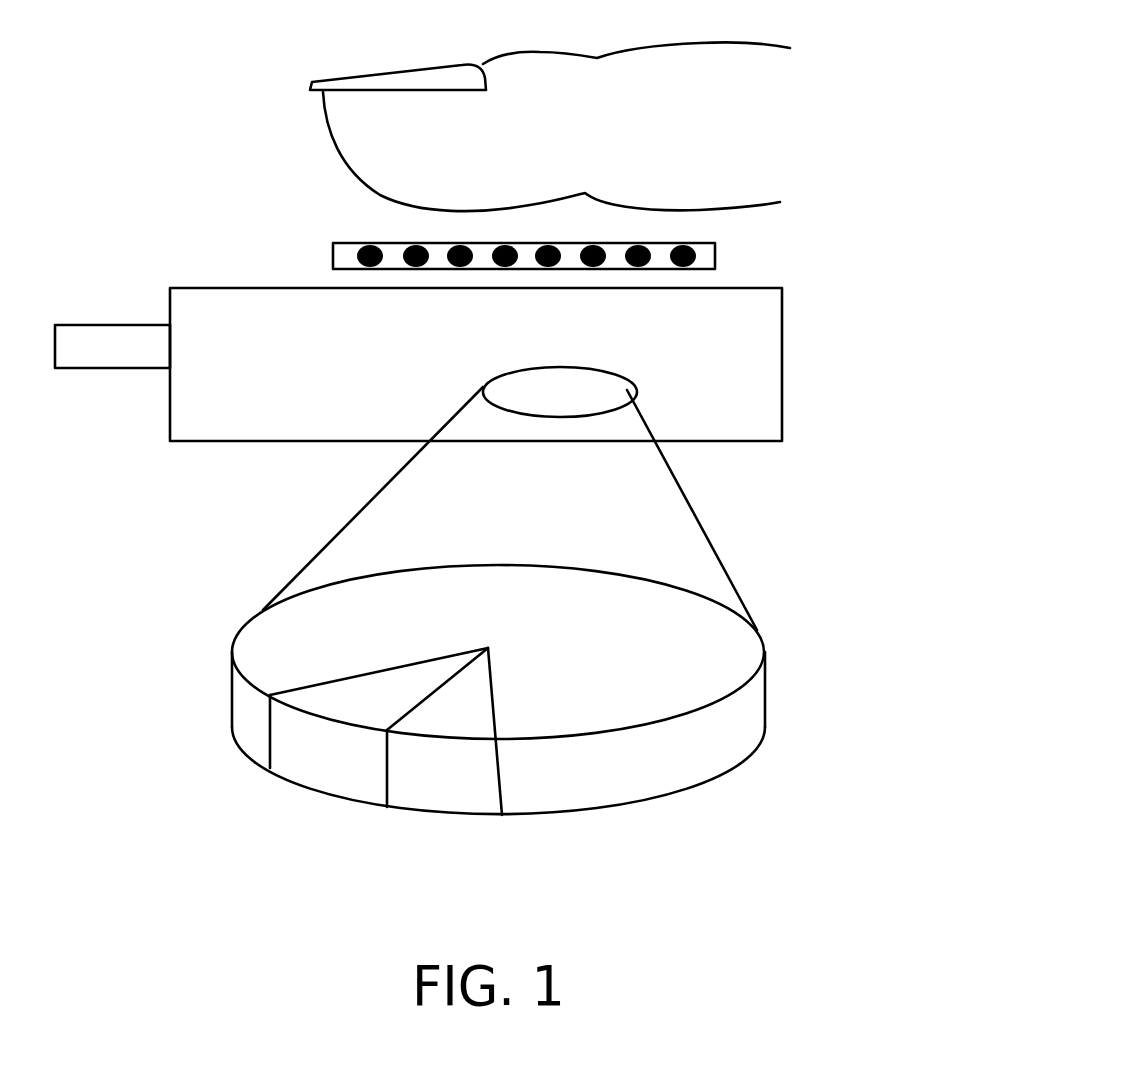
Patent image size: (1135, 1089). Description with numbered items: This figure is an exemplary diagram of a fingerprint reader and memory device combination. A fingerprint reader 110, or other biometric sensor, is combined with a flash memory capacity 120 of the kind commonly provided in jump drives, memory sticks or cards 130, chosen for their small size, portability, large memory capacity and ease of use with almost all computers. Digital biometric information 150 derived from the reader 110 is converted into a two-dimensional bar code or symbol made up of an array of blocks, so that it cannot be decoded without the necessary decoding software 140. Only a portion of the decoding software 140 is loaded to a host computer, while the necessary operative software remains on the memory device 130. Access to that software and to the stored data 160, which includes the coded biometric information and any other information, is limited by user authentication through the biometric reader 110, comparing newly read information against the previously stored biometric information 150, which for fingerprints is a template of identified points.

The fingerprint reader 110 is at (350, 252).
The flash memory capacity 120 is at (627, 390).
The memory device 130 is at (207, 390).
The decoding software 140 is at (350, 740).
The digital biometric information 150 is at (425, 775).
The stored data 160 is at (638, 655).